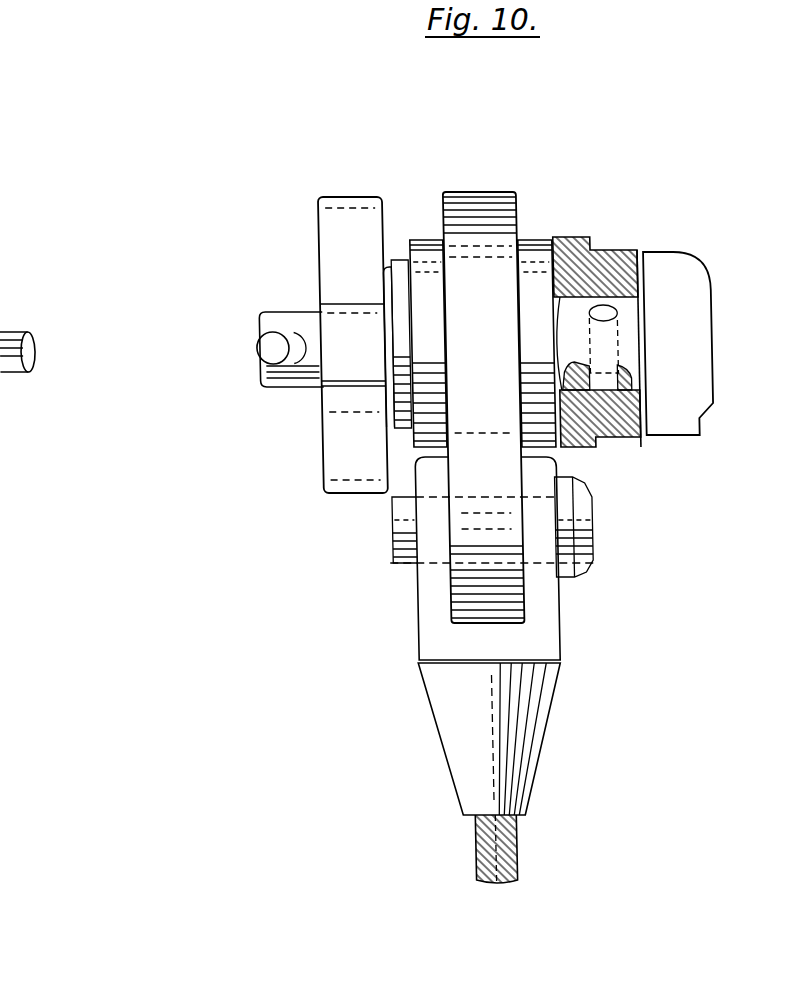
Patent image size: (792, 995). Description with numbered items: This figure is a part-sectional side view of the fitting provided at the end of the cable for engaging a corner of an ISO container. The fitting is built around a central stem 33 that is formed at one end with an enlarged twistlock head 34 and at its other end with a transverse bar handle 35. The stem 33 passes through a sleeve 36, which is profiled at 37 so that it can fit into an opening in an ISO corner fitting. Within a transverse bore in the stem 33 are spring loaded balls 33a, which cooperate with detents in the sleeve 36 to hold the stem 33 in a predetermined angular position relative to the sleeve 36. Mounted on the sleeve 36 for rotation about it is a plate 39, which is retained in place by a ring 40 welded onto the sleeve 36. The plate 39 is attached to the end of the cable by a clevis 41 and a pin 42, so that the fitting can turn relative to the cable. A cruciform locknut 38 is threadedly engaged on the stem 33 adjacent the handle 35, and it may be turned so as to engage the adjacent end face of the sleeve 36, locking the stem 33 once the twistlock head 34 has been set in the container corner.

The central stem 33 is at (634, 318).
The spring loaded balls 33a is at (603, 323).
The enlarged twistlock head 34 is at (687, 421).
The transverse bar handle 35 is at (259, 365).
The sleeve 36 is at (536, 237).
The profiled portion of sleeve 37 is at (610, 243).
The cruciform locknut 38 is at (317, 478).
The plate 39 is at (473, 180).
The ring 40 is at (407, 238).
The clevis 41 is at (437, 721).
The pin 42 is at (384, 562).